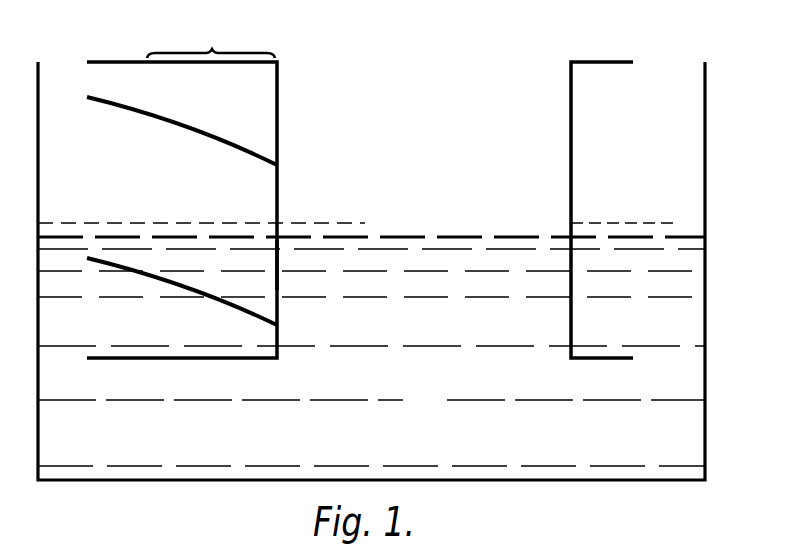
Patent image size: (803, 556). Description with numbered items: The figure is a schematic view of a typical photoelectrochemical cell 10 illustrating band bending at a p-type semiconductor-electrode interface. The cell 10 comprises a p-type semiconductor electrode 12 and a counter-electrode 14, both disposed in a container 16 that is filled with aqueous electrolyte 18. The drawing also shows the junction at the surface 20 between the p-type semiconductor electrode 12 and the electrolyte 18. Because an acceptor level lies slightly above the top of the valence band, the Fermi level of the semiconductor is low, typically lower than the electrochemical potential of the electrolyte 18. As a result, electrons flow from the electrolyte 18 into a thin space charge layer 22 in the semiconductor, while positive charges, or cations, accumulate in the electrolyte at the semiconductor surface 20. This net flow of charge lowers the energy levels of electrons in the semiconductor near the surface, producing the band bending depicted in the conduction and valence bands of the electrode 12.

The photoelectrochemical cell 10 is at (506, 56).
The p-type semiconductor electrode 12 is at (280, 118).
The counter-electrode 14 is at (600, 62).
The container 16 is at (705, 321).
The aqueous electrolyte 18 is at (438, 414).
The surface 20 is at (278, 266).
The space charge layer 22 is at (275, 54).